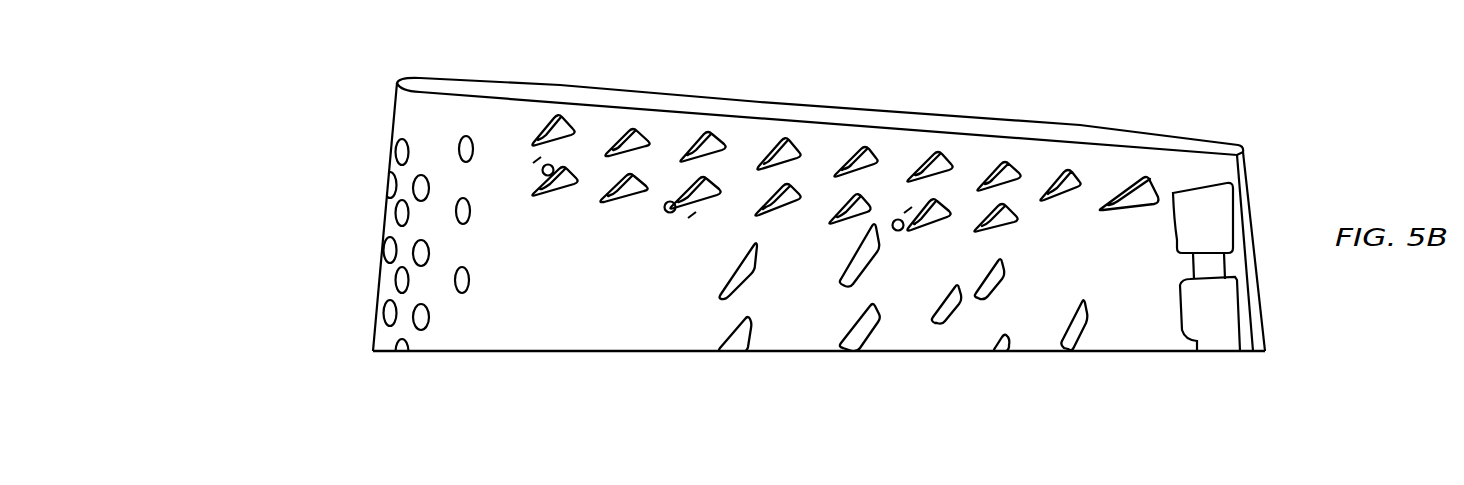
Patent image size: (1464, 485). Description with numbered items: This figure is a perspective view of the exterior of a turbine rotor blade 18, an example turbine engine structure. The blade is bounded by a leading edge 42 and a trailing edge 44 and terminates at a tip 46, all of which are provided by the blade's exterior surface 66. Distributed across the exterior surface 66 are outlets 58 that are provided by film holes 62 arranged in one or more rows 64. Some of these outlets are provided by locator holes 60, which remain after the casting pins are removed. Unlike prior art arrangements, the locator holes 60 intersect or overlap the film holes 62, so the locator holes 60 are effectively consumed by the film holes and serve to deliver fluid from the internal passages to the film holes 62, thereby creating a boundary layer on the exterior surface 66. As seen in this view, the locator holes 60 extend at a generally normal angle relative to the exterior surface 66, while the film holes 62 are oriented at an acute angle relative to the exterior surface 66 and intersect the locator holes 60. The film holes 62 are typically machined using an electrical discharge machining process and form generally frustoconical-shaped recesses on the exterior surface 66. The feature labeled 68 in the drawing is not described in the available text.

The turbine rotor blade 18 is at (834, 190).
The leading edge 42 is at (380, 197).
The trailing edge 44 is at (1264, 277).
The tip 46 is at (440, 83).
The outlet 58 is at (1218, 235).
The locator hole 60 is at (542, 170).
The film hole 62 is at (563, 137).
The row 64 is at (1176, 177).
The exterior surface 66 is at (560, 324).
The tab 68 is at (531, 160).